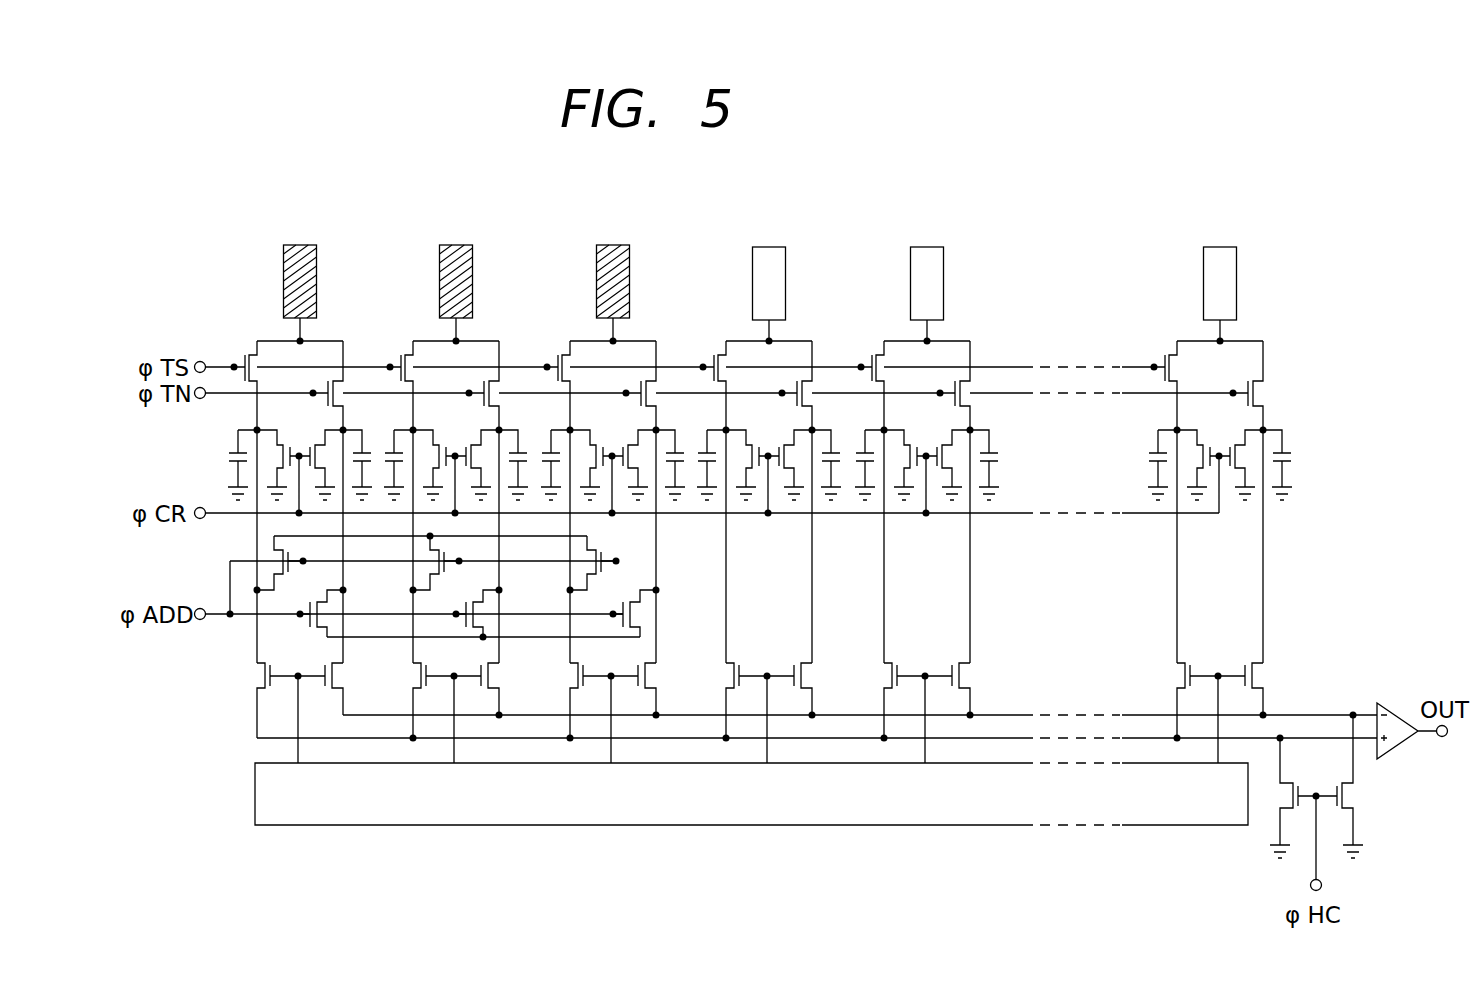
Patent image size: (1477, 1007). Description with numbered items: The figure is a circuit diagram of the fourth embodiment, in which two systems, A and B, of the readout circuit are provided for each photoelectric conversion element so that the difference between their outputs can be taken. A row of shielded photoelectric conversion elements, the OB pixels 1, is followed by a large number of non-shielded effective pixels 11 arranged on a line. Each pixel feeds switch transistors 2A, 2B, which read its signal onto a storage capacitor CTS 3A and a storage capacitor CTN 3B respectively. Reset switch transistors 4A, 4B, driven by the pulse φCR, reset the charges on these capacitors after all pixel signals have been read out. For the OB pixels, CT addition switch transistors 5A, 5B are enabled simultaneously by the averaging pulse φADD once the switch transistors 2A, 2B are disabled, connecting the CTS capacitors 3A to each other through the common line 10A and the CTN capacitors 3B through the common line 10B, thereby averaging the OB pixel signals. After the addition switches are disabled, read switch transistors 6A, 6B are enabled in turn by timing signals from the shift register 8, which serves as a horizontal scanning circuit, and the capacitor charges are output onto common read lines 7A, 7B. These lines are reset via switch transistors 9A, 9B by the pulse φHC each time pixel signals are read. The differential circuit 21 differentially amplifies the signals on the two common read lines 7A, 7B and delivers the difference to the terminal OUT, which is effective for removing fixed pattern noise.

The shielded photoelectric conversion element 1 is at (613, 245).
The non-shielded photoelectric conversion element 11 is at (1220, 247).
The switch transistor 2A is at (1163, 348).
The switch transistor 2B is at (1264, 400).
The storage capacitor CTS 3A is at (1148, 458).
The storage capacitor CTN 3B is at (1300, 464).
The reset switch transistor 4A is at (1205, 446).
The reset switch transistor 4B is at (1240, 442).
The CT addition switch transistor 5A is at (273, 552).
The CT addition switch transistor 5B is at (326, 610).
The read switch transistor 6A is at (1177, 679).
The read switch transistor 6B is at (1295, 680).
The common read line 7A is at (1004, 738).
The common read line 7B is at (988, 712).
The shift register 8 is at (462, 826).
The switch transistor 9A is at (1282, 798).
The switch transistor 9B is at (1354, 798).
The common line 10A is at (535, 536).
The common line 10B is at (528, 640).
The differential circuit 21 is at (1387, 705).